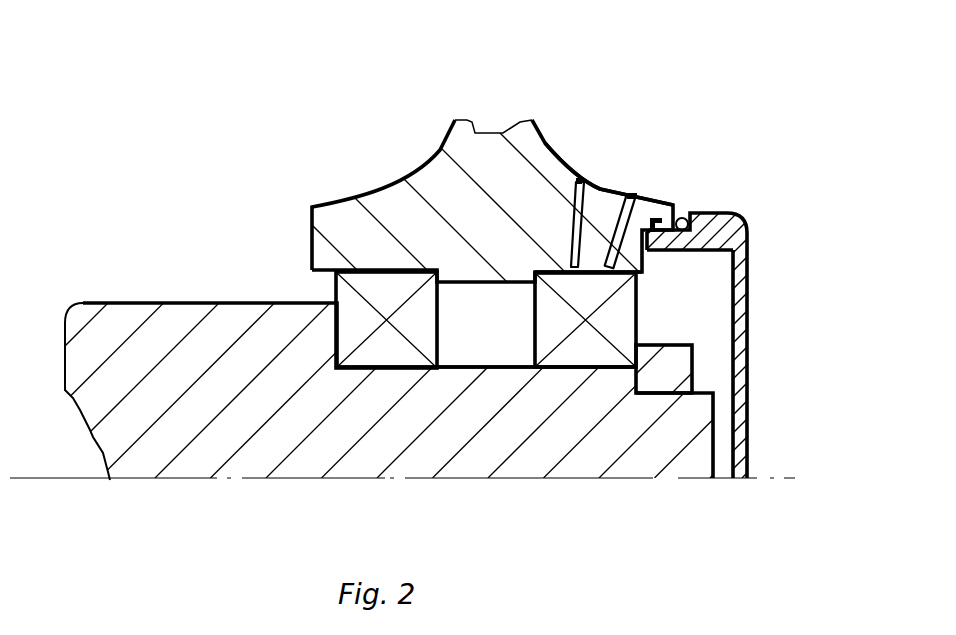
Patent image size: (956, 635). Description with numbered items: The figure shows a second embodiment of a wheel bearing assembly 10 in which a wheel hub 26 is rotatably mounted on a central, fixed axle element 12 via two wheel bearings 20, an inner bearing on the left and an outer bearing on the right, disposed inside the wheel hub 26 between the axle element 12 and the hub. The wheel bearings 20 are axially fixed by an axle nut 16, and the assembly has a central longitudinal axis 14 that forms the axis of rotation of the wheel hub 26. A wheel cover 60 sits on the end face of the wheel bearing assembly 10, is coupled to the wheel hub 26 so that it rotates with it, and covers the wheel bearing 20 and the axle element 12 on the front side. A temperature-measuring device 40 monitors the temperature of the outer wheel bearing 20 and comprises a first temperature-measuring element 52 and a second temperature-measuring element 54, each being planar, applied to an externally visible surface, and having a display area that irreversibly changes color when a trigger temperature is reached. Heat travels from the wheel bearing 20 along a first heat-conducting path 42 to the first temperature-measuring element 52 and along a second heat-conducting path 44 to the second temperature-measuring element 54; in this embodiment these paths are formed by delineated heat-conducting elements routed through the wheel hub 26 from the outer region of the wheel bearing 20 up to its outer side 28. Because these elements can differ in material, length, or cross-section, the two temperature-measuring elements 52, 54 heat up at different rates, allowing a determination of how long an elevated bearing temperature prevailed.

The wheel bearing assembly 10 is at (478, 297).
The axle element 12 is at (190, 462).
The longitudinal axis 14 is at (538, 478).
The axle nut 16 is at (680, 373).
The wheel bearings 20 is at (368, 283).
The wheel hub 26 is at (327, 230).
The outer side 28 is at (657, 200).
The temperature-measuring device 40 is at (629, 152).
The first heat-conducting path 42 is at (575, 232).
The second heat-conducting path 44 is at (612, 233).
The first temperature-measuring element 52 is at (583, 182).
The second temperature-measuring element 54 is at (635, 186).
The wheel cover 60 is at (745, 385).